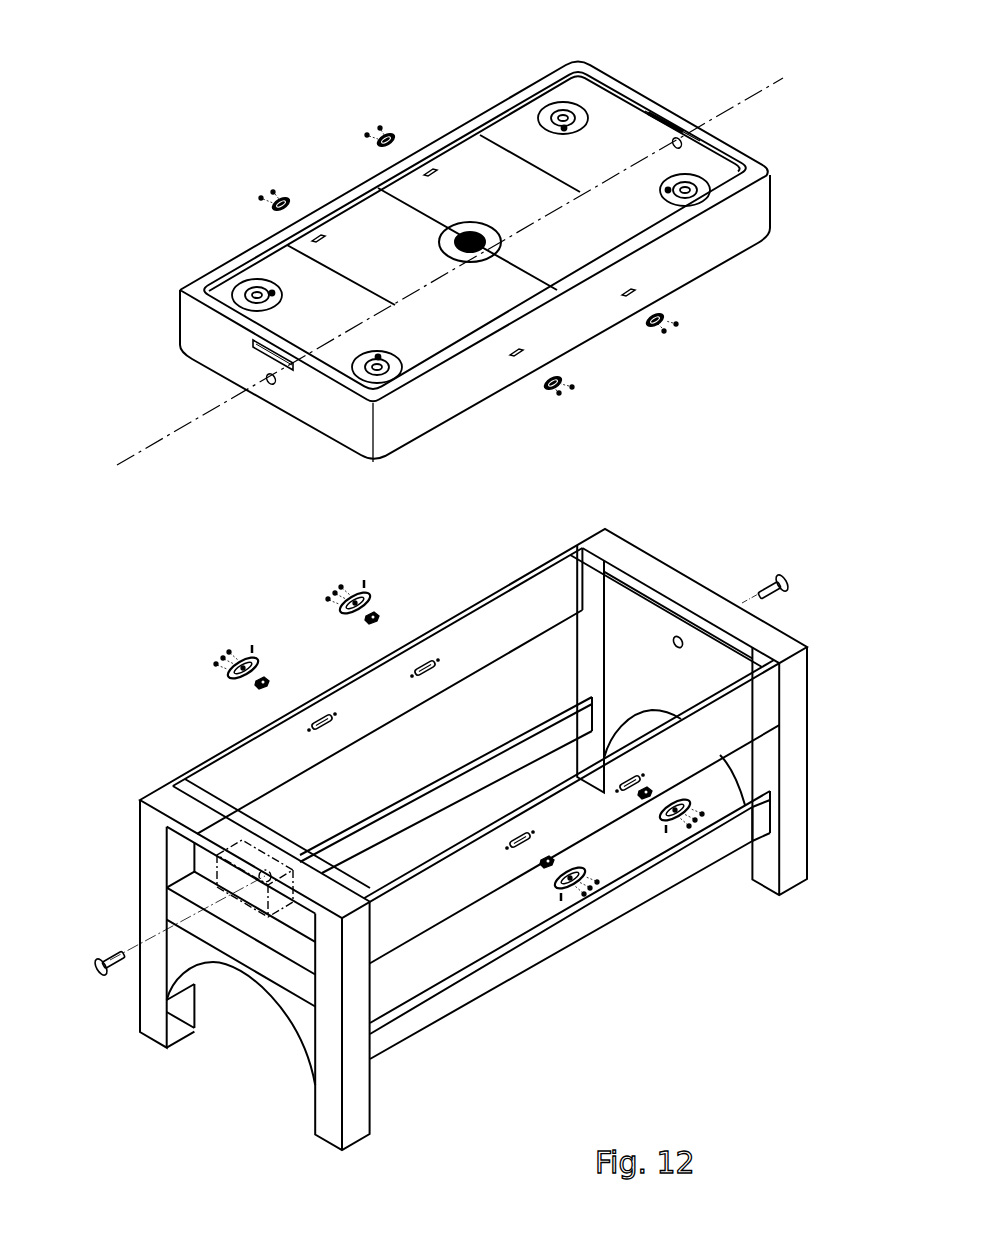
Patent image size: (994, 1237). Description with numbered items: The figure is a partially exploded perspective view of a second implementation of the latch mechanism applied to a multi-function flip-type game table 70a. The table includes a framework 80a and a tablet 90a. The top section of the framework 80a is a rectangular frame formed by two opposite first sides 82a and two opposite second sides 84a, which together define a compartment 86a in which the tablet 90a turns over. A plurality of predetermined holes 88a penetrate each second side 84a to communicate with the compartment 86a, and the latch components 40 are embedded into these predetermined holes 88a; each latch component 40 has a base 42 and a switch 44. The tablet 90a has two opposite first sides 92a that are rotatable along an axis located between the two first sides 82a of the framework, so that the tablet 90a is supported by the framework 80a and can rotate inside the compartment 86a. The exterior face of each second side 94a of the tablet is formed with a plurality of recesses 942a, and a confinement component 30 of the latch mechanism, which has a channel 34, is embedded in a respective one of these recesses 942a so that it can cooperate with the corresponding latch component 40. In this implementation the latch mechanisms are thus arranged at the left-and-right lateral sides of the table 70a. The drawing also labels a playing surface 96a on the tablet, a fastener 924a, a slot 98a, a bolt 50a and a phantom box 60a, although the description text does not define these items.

The game table 70a is at (86, 289).
The tablet 90a is at (172, 317).
The first sides of the tablet 92a is at (593, 70).
The second side of the tablet 94a is at (452, 132).
The playing surface 96a is at (515, 128).
The recesses 942a is at (514, 362).
The fastener 924a is at (270, 210).
The slot 98a is at (268, 354).
The confinement component 30 is at (372, 145).
The channel 34 is at (566, 393).
The framework 80a is at (175, 720).
The first sides of the framework 82a is at (716, 603).
The second sides of the framework 84a is at (472, 883).
The compartment 86a is at (560, 658).
The predetermined holes 88a is at (410, 672).
The latch component 40 is at (210, 652).
The base 42 is at (585, 885).
The switch 44 is at (545, 857).
The bolt 50a is at (110, 965).
The control box 60a is at (258, 898).